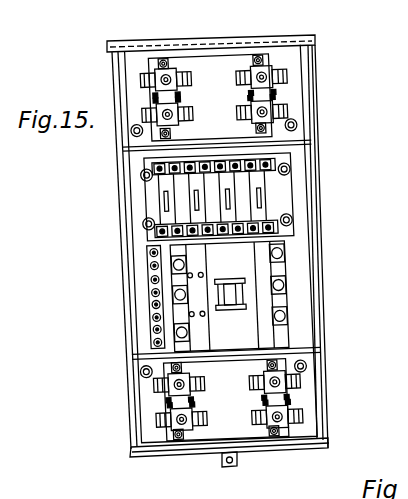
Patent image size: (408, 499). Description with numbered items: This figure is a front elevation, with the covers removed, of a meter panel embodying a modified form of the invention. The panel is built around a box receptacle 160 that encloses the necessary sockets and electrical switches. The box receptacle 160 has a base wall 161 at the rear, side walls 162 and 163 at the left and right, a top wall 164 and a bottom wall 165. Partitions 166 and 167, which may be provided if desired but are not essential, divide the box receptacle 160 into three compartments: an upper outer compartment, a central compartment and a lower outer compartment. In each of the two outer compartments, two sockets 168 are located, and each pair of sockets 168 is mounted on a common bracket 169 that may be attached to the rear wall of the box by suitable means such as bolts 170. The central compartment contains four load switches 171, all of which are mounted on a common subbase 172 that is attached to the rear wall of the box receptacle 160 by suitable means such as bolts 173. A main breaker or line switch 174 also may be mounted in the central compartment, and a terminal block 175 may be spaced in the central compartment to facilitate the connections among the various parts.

The box receptacle 160 is at (231, 237).
The base wall 161 is at (299, 175).
The side wall 162 is at (121, 281).
The side wall 163 is at (323, 283).
The top wall 164 is at (266, 33).
The bottom wall 165 is at (274, 452).
The partition 166 is at (305, 143).
The partition 167 is at (320, 353).
The socket 168 is at (168, 88).
The common bracket 169 is at (210, 73).
The bolt 170 is at (264, 53).
The load switch 171 is at (282, 200).
The common subbase 172 is at (289, 160).
The bolt 173 is at (143, 175).
The main breaker or line switch 174 is at (292, 300).
The terminal block 175 is at (147, 319).